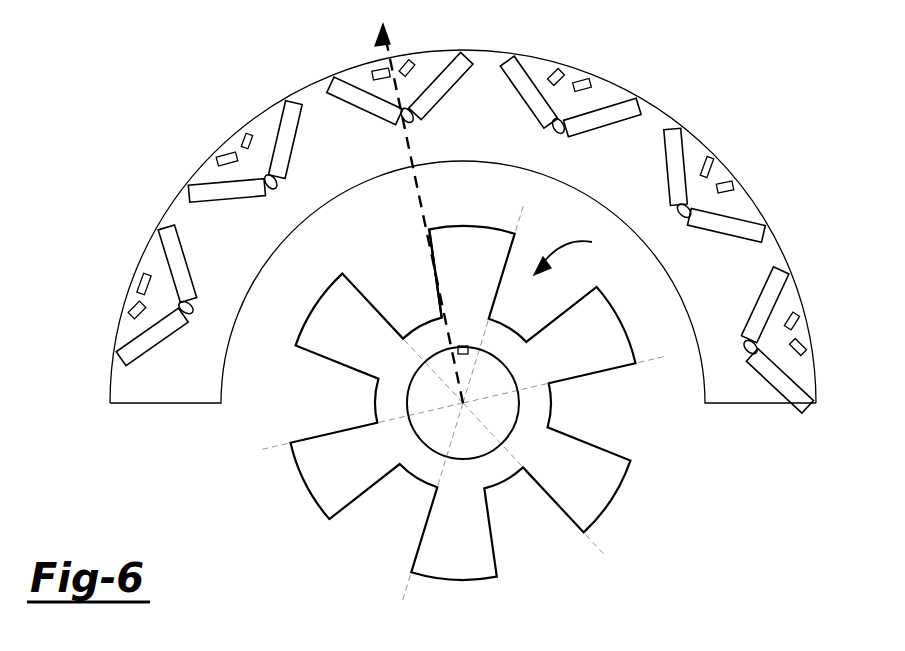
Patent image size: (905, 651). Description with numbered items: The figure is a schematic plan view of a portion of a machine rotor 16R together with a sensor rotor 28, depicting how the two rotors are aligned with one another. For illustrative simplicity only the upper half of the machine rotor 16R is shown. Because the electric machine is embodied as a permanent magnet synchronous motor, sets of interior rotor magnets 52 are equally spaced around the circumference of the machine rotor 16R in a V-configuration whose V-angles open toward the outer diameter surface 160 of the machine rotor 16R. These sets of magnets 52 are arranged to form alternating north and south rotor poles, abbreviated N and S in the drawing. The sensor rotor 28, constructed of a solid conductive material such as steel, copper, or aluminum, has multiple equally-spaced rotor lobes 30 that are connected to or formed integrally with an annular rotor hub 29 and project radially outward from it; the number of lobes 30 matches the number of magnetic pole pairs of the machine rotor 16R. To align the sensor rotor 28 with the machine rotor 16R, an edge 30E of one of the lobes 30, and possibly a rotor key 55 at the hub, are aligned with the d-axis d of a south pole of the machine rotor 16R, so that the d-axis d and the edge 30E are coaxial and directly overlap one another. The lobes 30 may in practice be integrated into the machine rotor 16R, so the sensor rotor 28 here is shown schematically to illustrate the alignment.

The machine rotor 16R is at (138, 393).
The outer diameter surface 160 is at (659, 102).
The interior rotor magnets 52 is at (283, 141).
The rotor lobes 30 is at (482, 268).
The edge 30E is at (440, 272).
The annular rotor hub 29 is at (500, 406).
The rotor key 55 is at (468, 352).
The sensor rotor 28 is at (578, 253).
The d-axis d is at (376, 49).